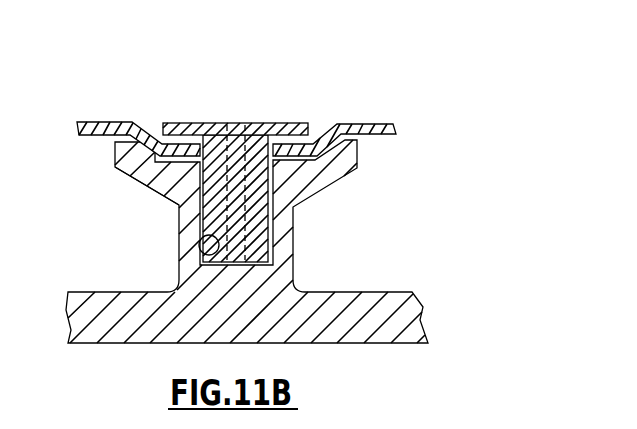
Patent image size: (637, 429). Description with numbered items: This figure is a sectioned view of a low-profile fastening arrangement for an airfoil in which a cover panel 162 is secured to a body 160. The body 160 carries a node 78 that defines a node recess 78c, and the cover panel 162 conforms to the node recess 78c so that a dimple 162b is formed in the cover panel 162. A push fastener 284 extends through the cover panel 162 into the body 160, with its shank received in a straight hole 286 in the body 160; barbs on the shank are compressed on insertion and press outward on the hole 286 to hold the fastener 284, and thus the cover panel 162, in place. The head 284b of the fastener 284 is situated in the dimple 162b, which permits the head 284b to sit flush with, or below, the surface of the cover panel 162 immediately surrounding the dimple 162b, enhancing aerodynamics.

The body 160 is at (338, 302).
The rib node 78 is at (283, 220).
The node recess 78c is at (143, 181).
The push fastener 284 is at (203, 156).
The head 284b is at (218, 124).
The straight hole 286 is at (249, 140).
The cover panel 162 is at (279, 107).
The dimple 162b is at (320, 112).